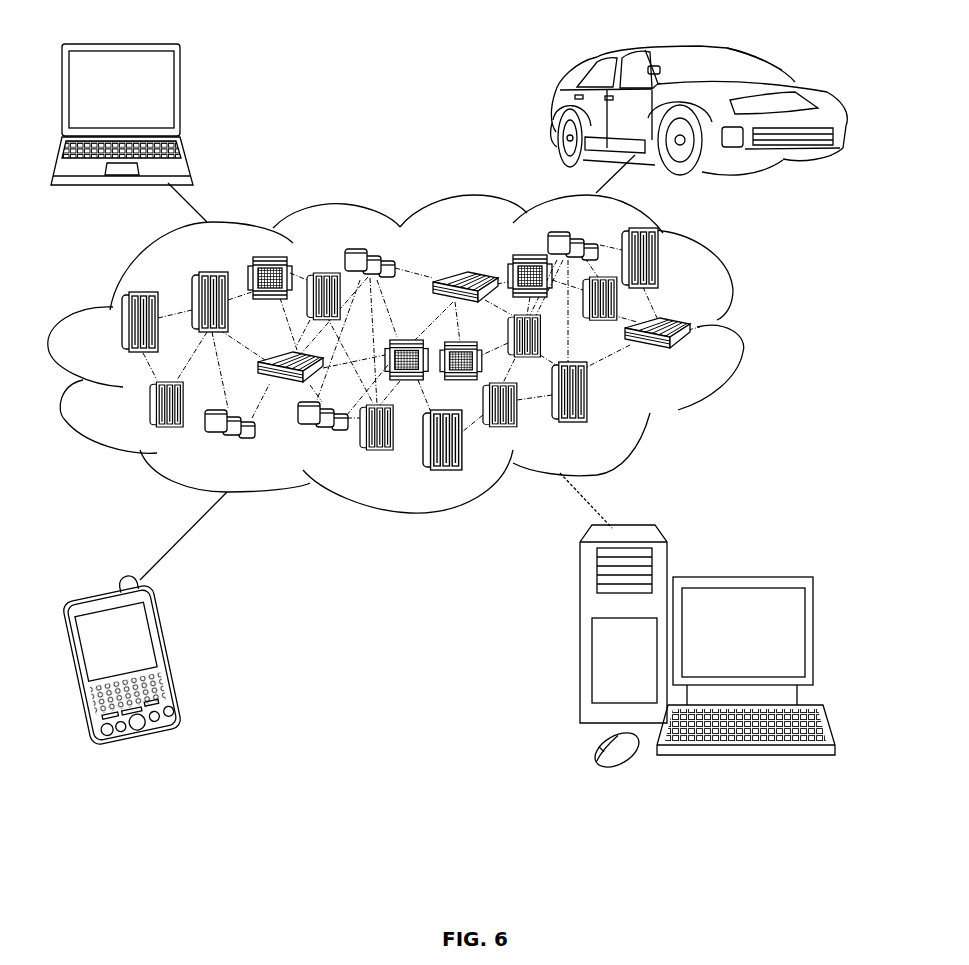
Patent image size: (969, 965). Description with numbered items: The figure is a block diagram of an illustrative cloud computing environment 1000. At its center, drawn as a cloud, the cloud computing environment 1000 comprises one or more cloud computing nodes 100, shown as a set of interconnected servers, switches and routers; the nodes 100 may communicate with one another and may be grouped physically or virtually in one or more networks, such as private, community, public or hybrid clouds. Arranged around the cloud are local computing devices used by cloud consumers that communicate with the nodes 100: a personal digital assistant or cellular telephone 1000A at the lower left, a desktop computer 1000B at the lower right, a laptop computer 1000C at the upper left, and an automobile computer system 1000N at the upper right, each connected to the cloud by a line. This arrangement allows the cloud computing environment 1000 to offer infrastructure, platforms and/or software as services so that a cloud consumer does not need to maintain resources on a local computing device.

The laptop computer 1000C is at (184, 100).
The automobile computer system 1000N is at (553, 112).
The cloud computing environment 1000 is at (744, 333).
The cloud computing nodes 100 is at (694, 357).
The personal digital assistant (PDA) or cellular telephone 1000A is at (173, 657).
The desktop computer 1000B is at (740, 575).